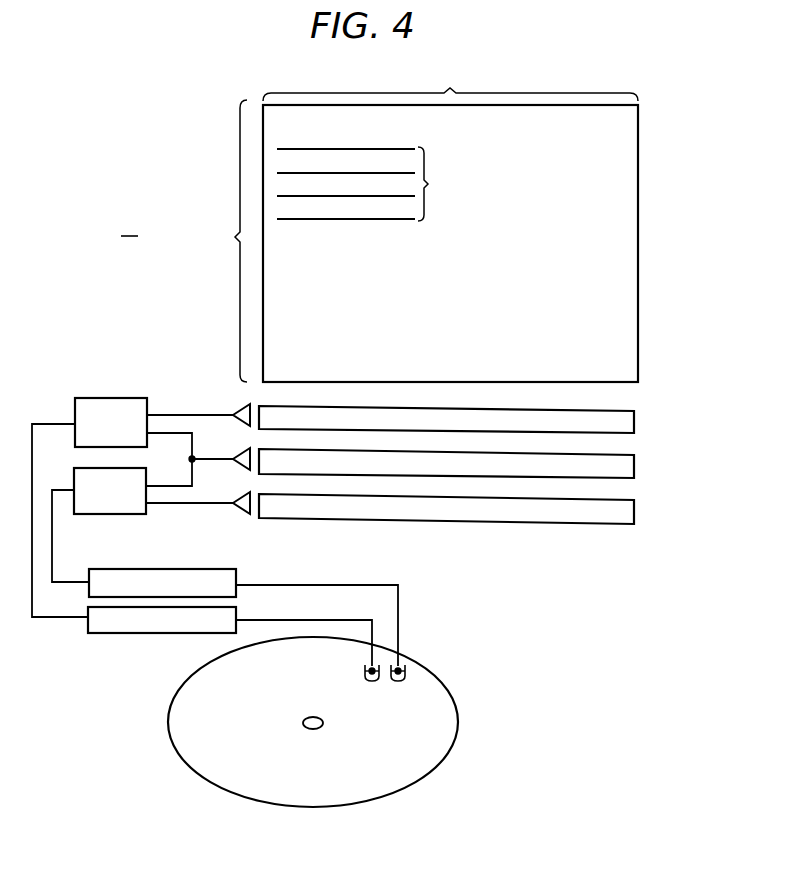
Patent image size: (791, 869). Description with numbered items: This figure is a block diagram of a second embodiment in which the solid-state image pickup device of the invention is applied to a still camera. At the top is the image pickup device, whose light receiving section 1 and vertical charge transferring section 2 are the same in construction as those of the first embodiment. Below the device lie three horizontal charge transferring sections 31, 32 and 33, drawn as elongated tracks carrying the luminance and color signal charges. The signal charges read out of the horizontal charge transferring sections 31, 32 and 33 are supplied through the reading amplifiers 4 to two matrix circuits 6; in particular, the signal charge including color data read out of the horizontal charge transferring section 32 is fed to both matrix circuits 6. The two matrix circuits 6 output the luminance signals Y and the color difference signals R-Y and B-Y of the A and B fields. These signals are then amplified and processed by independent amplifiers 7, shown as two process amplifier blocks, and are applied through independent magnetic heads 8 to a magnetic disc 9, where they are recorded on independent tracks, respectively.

The light receiving section 1 is at (386, 223).
The vertical charge transferring section 2 is at (637, 260).
The reading amplifier 4 is at (240, 495).
The matrix circuit 6 is at (75, 409).
The amplifier 7 is at (236, 576).
The magnetic head 8 is at (378, 664).
The magnetic disc 9 is at (440, 750).
The horizontal charge transferring section 31 is at (634, 424).
The horizontal charge transferring section 32 is at (634, 468).
The horizontal charge transferring section 33 is at (634, 514).